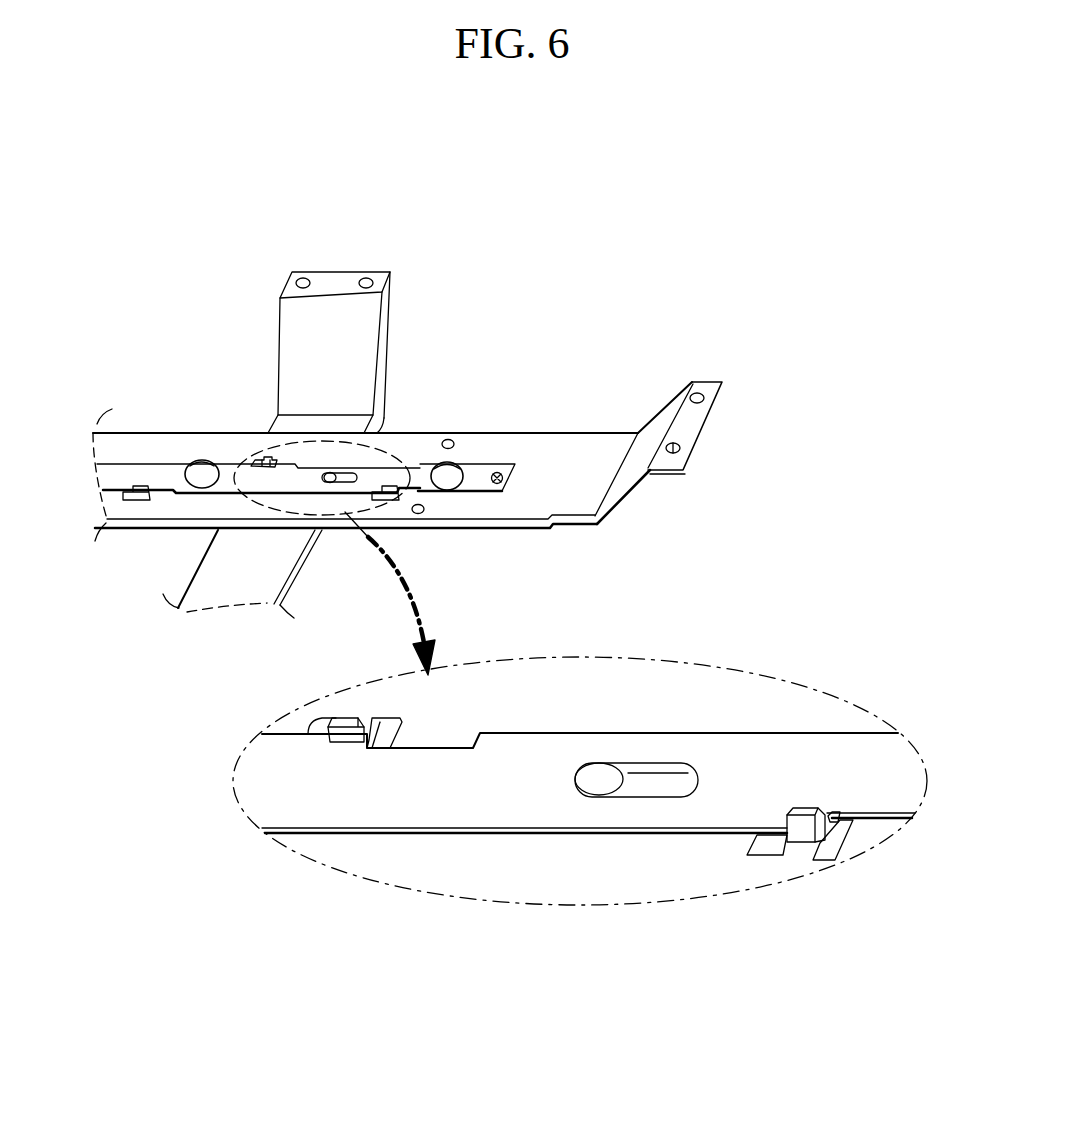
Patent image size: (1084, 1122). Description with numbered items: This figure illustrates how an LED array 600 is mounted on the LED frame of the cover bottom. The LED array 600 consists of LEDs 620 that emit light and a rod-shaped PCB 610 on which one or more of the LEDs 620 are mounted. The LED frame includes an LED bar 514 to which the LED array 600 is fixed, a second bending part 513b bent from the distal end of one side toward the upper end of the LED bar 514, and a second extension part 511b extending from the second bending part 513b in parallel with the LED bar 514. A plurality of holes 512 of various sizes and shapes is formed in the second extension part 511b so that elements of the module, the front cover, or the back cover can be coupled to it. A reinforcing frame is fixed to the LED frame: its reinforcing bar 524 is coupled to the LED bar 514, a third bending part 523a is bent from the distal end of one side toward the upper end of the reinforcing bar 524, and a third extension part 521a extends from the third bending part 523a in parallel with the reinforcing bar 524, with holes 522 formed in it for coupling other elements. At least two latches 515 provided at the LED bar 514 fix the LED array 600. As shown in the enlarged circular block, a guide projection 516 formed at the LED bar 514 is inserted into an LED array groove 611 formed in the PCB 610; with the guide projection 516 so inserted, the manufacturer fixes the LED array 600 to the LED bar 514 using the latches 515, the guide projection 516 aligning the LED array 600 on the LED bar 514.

The second extension part 511b is at (710, 378).
The holes 512 is at (679, 438).
The second bending part 513b is at (656, 414).
The LED bar 514 is at (579, 432).
The latches 515 is at (346, 730).
The guide projection 516 is at (597, 779).
The third extension part 521a is at (390, 284).
The holes 522 is at (365, 280).
The third bending part 523a is at (384, 342).
The reinforcing bar 524 is at (376, 428).
The LED array 600 is at (588, 610).
The PCB 610 is at (478, 480).
The LED array groove 611 is at (662, 770).
The LEDs 620 is at (445, 476).